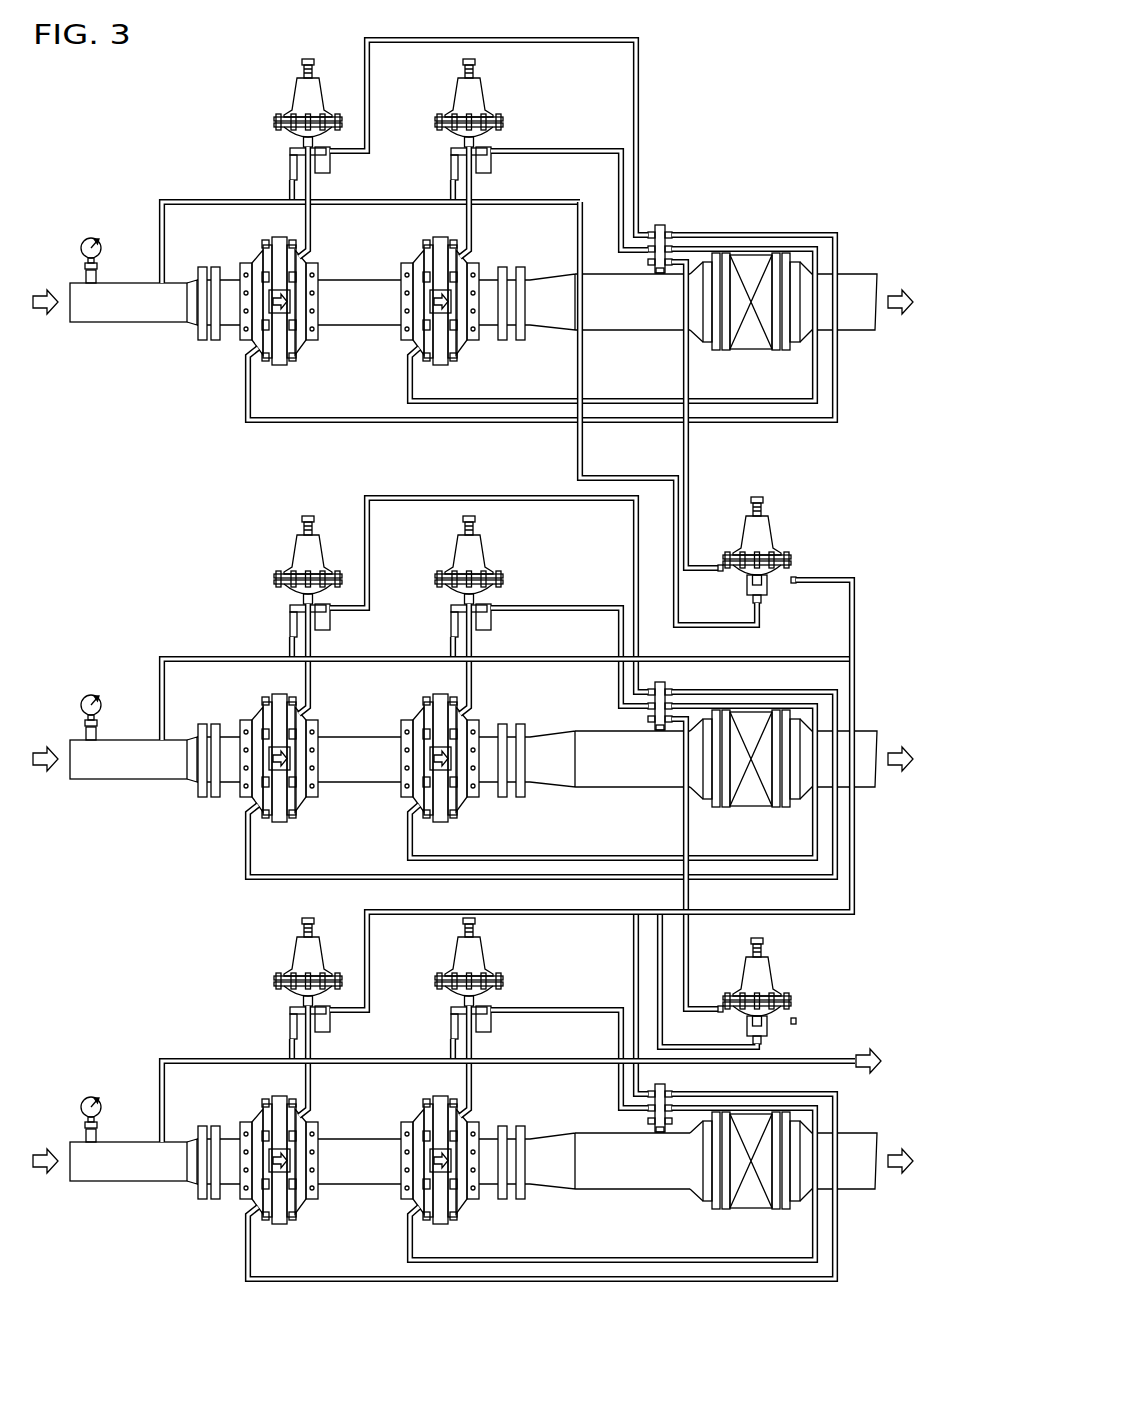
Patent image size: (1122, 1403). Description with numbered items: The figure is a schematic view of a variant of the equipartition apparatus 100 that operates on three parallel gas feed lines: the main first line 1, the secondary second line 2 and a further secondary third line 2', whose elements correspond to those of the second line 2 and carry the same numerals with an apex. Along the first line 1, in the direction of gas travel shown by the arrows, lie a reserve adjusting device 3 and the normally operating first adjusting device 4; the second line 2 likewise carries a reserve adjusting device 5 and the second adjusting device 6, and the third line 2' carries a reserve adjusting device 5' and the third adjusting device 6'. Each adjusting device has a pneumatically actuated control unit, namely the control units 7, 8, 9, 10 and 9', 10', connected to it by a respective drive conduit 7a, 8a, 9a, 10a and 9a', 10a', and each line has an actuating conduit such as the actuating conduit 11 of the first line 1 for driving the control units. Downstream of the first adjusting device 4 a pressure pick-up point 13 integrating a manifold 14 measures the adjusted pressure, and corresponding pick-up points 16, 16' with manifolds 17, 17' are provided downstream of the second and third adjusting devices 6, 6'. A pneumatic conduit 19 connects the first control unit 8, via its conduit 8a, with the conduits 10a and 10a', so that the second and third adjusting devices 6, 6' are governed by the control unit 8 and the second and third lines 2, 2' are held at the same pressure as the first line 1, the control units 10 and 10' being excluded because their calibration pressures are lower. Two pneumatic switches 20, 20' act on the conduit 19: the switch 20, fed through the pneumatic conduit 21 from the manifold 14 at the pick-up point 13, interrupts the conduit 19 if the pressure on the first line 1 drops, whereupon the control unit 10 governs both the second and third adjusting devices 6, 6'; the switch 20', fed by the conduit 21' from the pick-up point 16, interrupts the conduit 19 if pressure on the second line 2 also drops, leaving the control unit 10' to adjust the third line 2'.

The apparatus for equipartition of the flow 100 is at (790, 68).
The first line 1 is at (129, 281).
The second line 2 is at (128, 726).
The third line 2' is at (128, 1127).
The adjusting device 3 is at (266, 238).
The first adjusting device 4 is at (423, 238).
The adjusting device 5 is at (275, 719).
The second adjusting device 6 is at (433, 719).
The adjusting device 5' is at (274, 1120).
The third adjusting device 6' is at (434, 1120).
The control unit 7 is at (293, 95).
The first control unit 8 is at (485, 95).
The control unit 9 is at (290, 575).
The second control unit 10 is at (443, 575).
The control unit 9' is at (290, 975).
The control unit 10' is at (445, 978).
The drive conduit 7a is at (314, 225).
The drive conduit 8a is at (476, 225).
The drive conduit 9a is at (337, 659).
The drive conduit 10a is at (507, 659).
The drive conduit 9a' is at (342, 1061).
The drive conduit 10a' is at (511, 1061).
The actuating conduit 11 is at (197, 197).
The pressure pick-up point 13 is at (656, 278).
The manifold 14 is at (658, 222).
The pressure pick-up point 16 is at (647, 778).
The manifold 17 is at (780, 693).
The pressure pick-up point 16' is at (650, 1181).
The manifold 17' is at (784, 1104).
The pneumatic conduit 19 is at (575, 457).
The pneumatic switch 20 is at (777, 549).
The pneumatic switch 20' is at (788, 991).
The pneumatic conduit 21 is at (715, 415).
The pneumatic conduit 21' is at (718, 864).